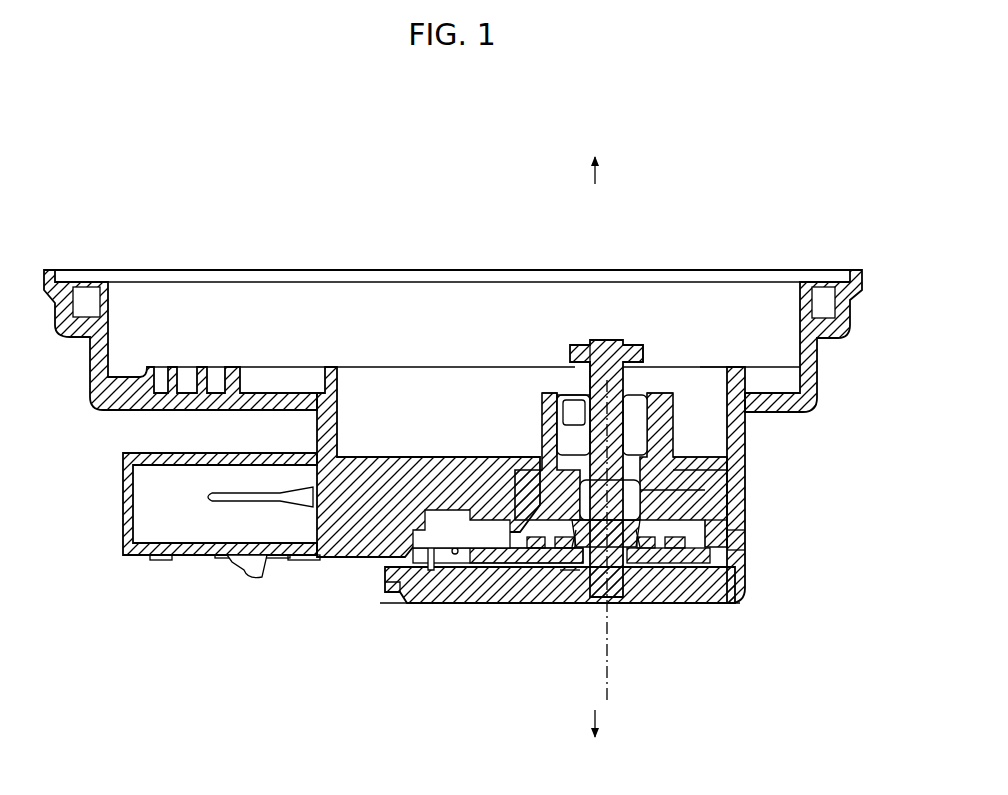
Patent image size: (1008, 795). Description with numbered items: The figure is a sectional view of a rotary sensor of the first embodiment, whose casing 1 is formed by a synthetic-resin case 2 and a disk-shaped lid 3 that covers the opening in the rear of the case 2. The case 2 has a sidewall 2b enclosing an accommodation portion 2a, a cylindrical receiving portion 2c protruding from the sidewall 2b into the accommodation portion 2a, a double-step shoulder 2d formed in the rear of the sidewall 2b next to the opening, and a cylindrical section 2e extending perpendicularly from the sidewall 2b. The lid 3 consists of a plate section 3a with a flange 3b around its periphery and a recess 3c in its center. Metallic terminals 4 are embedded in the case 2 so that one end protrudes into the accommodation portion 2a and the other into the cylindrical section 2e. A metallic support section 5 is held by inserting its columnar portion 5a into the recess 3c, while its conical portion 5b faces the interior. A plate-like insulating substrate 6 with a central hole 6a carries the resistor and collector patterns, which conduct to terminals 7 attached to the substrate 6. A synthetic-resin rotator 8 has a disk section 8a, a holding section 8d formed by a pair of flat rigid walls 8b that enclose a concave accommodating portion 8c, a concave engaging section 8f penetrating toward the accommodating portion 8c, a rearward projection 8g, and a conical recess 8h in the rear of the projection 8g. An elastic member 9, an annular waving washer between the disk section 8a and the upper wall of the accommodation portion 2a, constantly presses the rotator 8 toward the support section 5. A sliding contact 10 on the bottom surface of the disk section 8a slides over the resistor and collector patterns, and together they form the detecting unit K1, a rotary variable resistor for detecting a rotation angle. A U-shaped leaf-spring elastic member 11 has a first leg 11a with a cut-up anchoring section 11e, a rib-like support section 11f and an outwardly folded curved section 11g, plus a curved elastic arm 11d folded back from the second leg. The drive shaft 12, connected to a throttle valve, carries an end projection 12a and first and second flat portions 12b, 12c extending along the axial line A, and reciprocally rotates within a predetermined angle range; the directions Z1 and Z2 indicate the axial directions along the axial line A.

The casing 1 is at (303, 580).
The case 2 is at (207, 266).
The accommodation portion 2a is at (447, 508).
The sidewall 2b is at (745, 440).
The cylindrical receiving portion 2c is at (690, 435).
The double-step shoulder 2d is at (730, 555).
The cylindrical section 2e is at (145, 557).
The lid 3 is at (427, 605).
The plate section 3a is at (490, 602).
The flange 3b is at (383, 587).
The recess 3c is at (588, 603).
The terminals 4 is at (224, 503).
The support section 5 is at (611, 608).
The columnar portion 5a is at (640, 605).
The conical portion 5b is at (572, 565).
The insulating substrate 6 is at (478, 562).
The hole 6a is at (698, 604).
The terminals 7 is at (432, 572).
The rotator 8 is at (538, 486).
The disk section 8a is at (735, 518).
The walls 8b is at (528, 470).
The concave accommodating portion 8c is at (700, 495).
The holding section 8d is at (745, 422).
The concave engaging section 8f is at (550, 452).
The projection 8g is at (566, 585).
The conical recess 8h is at (668, 603).
The elastic member 9 is at (462, 520).
The sliding contact 10 is at (462, 556).
The elastic member 11 is at (655, 395).
The first leg 11a is at (575, 540).
The curved elastic arm 11d is at (672, 402).
The anchoring section 11e is at (570, 418).
The support section 11f is at (556, 432).
The curved section 11g is at (558, 405).
The drive shaft 12 is at (630, 341).
The projection 12a is at (600, 395).
The first flat portion 12b is at (586, 395).
The second flat portion 12c is at (640, 388).
The detecting unit K1 is at (700, 532).
The axial line A is at (607, 673).
The direction Z1 is at (596, 743).
The direction Z2 is at (592, 150).